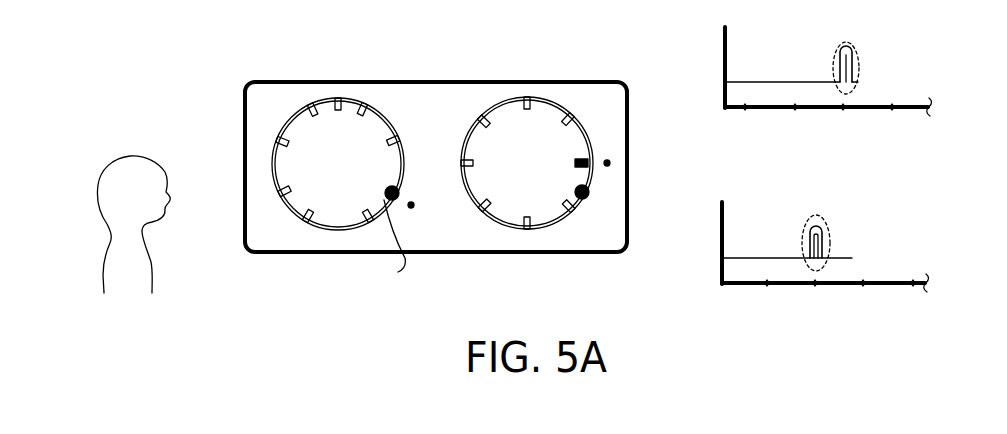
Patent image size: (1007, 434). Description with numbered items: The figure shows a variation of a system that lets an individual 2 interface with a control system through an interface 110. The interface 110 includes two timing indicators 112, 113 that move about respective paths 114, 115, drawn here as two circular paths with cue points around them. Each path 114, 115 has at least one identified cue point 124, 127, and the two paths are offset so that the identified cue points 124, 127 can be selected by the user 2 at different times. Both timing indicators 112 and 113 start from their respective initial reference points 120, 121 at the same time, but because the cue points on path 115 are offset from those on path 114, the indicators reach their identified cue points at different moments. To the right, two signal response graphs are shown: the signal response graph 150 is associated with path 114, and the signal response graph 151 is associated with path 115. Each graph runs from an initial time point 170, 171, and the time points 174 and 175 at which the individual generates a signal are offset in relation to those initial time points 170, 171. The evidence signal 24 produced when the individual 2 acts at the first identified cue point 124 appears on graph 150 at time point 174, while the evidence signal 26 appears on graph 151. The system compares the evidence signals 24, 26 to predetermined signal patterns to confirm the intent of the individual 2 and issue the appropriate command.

The individual 2 is at (113, 257).
The interface 110 is at (330, 258).
The path 115 is at (284, 118).
The path 114 is at (497, 104).
The initial reference point 121 is at (342, 98).
The initial reference point 120 is at (530, 99).
The timing indicator 113 is at (400, 192).
The timing indicator 112 is at (590, 197).
The identified cue point 124 is at (582, 162).
The identified cue point 127 is at (383, 243).
The signal response graph 151 is at (849, 81).
The signal response graph 150 is at (827, 254).
The initial time point 171 is at (725, 110).
The initial time point 170 is at (722, 286).
The time point 175 is at (843, 112).
The time point 174 is at (815, 287).
The evidence signal 26 is at (832, 46).
The evidence signal 24 is at (838, 218).